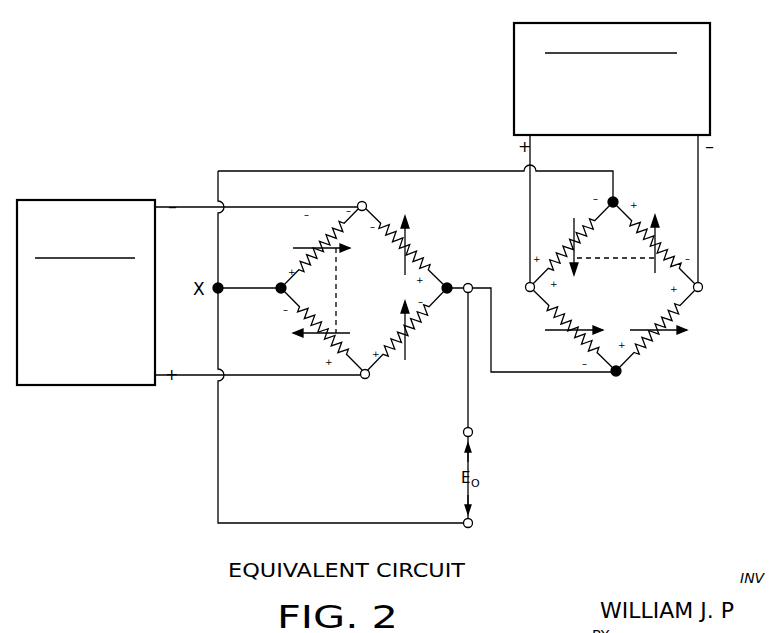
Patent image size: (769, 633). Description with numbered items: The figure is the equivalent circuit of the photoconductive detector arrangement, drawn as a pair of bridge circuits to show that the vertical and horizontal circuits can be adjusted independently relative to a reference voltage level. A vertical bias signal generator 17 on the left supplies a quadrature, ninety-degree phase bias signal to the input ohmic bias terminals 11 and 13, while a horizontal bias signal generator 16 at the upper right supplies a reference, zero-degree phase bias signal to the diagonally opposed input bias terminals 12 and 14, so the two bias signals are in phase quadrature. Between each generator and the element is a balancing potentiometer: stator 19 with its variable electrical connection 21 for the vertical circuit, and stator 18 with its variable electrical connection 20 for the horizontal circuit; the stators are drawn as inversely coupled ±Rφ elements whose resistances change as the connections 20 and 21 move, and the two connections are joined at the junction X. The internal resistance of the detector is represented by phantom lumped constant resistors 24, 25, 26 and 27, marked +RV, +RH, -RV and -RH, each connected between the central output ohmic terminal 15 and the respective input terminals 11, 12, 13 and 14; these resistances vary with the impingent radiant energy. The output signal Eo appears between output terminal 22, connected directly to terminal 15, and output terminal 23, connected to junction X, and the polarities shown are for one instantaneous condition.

The input ohmic bias terminal 11 is at (358, 204).
The input ohmic bias terminal 12 is at (703, 285).
The input ohmic bias terminal 13 is at (362, 377).
The input ohmic bias terminal 14 is at (528, 291).
The output ohmic terminal 15 is at (471, 285).
The horizontal bias signal generator 16 is at (710, 77).
The vertical bias signal generator 17 is at (87, 200).
The potentiometer stator 18 is at (633, 230).
The potentiometer stator 19 is at (305, 265).
The variable electrical connection 20 is at (617, 198).
The variable electrical connection 21 is at (280, 286).
The output terminal 22 is at (473, 432).
The output terminal 23 is at (473, 524).
The phantom lumped constant resistor 24 is at (410, 205).
The phantom lumped constant resistor 25 is at (653, 327).
The phantom lumped constant resistor 26 is at (427, 313).
The phantom lumped constant resistor 27 is at (563, 313).